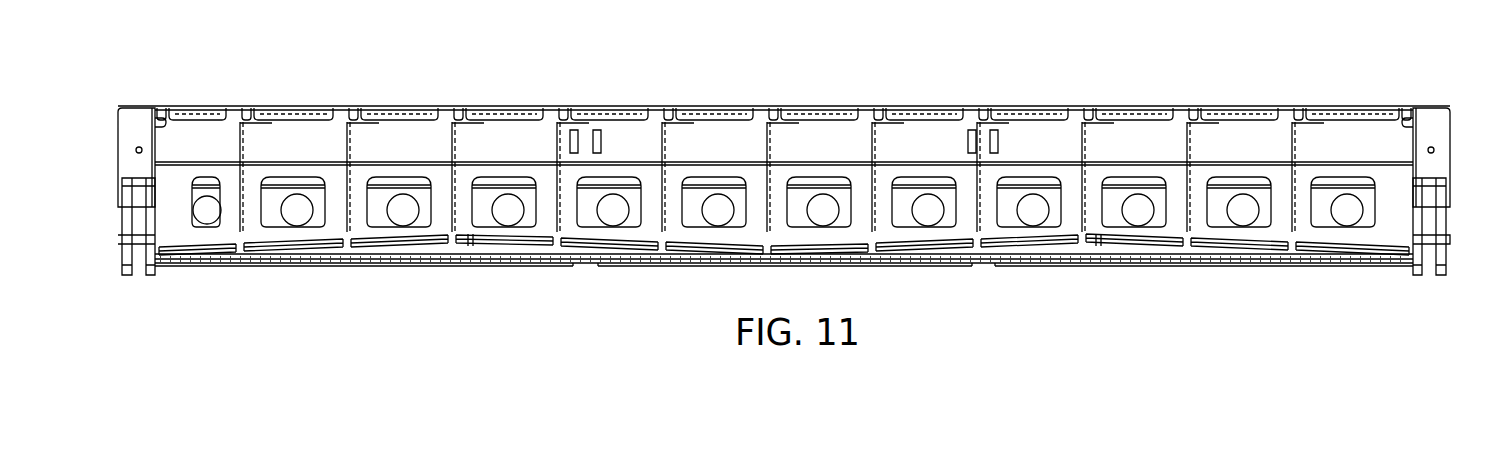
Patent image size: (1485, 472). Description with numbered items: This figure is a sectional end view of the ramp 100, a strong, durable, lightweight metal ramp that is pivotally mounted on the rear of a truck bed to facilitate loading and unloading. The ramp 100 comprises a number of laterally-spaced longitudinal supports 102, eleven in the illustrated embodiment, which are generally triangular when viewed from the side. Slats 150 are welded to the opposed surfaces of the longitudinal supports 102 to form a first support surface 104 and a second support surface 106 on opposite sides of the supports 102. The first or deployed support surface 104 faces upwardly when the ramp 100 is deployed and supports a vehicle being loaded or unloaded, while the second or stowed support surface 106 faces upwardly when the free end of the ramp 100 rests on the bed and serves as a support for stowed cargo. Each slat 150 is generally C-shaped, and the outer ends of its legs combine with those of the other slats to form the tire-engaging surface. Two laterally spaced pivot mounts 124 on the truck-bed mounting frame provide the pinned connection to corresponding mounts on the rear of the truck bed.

The ramp 100 is at (931, 48).
The longitudinal support 102 is at (142, 132).
The first support surface 104 is at (1145, 265).
The second support surface 106 is at (1100, 110).
The pivot mount 124 is at (125, 277).
The slat 150 is at (206, 160).